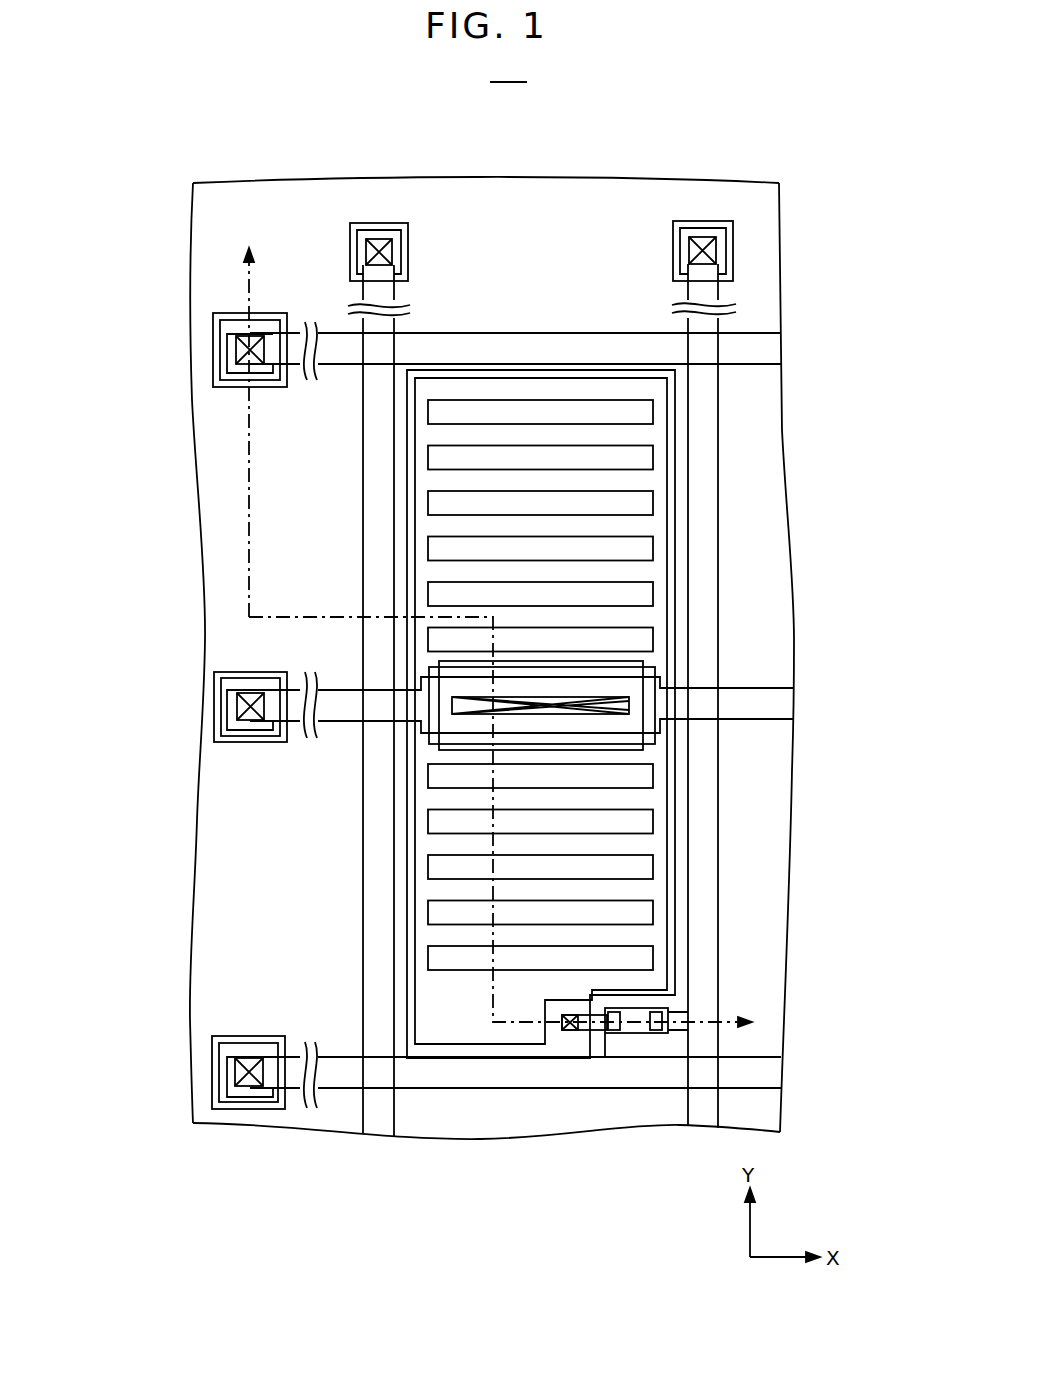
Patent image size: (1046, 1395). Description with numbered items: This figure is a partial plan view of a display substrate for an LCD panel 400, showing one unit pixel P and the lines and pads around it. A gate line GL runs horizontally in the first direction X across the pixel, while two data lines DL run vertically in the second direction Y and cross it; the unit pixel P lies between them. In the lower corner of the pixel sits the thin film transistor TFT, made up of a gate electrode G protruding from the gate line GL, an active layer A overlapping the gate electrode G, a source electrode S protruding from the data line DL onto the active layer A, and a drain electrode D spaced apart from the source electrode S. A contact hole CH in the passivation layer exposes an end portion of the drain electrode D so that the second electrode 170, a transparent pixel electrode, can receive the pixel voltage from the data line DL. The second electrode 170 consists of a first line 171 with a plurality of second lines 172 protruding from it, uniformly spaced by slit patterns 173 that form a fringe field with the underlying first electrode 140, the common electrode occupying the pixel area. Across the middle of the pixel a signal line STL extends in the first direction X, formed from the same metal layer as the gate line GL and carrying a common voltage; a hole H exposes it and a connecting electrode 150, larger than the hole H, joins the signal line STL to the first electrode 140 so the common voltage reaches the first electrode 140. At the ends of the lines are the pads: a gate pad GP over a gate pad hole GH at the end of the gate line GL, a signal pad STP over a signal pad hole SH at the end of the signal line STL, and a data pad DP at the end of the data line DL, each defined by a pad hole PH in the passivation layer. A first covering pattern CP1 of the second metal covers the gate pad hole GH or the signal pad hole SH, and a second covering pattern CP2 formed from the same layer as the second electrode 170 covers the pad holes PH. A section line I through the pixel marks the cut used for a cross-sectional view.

The LCD panel 400 is at (492, 599).
The gate line GL is at (545, 345).
The gate pad GP is at (216, 310).
The gate pad hole GH is at (256, 342).
The data pad DP is at (360, 214).
The data line DL is at (710, 562).
The pad hole PH is at (716, 250).
The first covering pattern CP1 is at (214, 333).
The second covering pattern CP2 is at (222, 367).
The second electrode 170 is at (124, 441).
The first line 171 is at (420, 481).
The second line 172 is at (493, 436).
The slit pattern 173 is at (640, 457).
The first electrode 140 is at (676, 618).
The connecting electrode 150 is at (660, 684).
The hole H is at (613, 707).
The unit pixel P is at (542, 459).
The signal line STL is at (328, 712).
The signal pad STP is at (237, 672).
The signal pad hole SH is at (252, 735).
The section line I-I' I is at (509, 642).
The thin film transistor TFT is at (585, 1128).
The drain electrode D is at (585, 1033).
The contact hole CH is at (562, 1028).
The active layer A is at (625, 1035).
The gate electrode G is at (648, 1040).
The source electrode S is at (668, 1032).